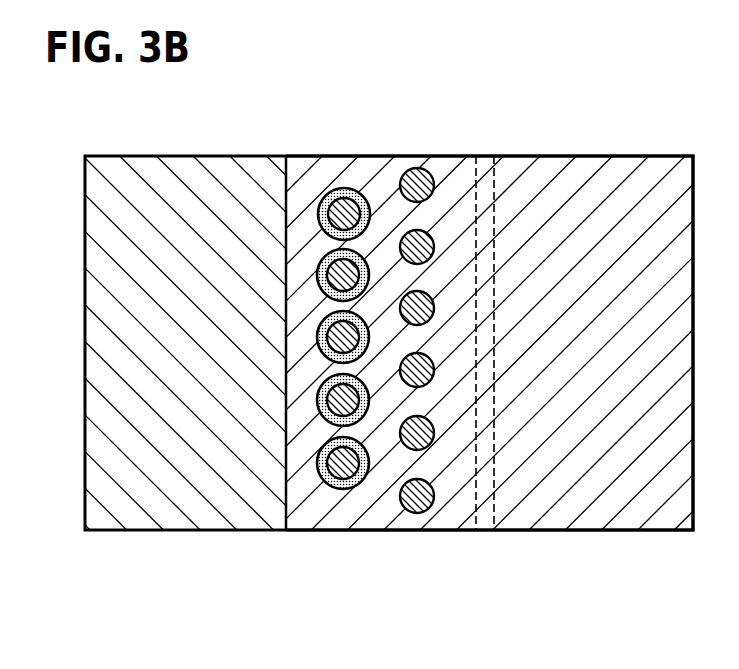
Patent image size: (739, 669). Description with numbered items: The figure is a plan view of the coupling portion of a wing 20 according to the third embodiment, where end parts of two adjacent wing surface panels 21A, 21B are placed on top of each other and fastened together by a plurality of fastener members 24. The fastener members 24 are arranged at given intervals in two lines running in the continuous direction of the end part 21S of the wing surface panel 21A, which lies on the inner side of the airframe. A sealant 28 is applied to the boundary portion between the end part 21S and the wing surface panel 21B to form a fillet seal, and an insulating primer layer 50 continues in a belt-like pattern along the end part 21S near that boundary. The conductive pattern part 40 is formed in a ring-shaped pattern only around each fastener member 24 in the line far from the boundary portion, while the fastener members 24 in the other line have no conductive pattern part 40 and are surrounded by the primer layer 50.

The wing 20 is at (623, 124).
The wing surface panel 21A is at (140, 165).
The wing surface panel 21B is at (666, 162).
The end part 21S is at (482, 497).
The fastener member 24 is at (341, 196).
The sealant 28 is at (494, 208).
The conductive pattern part 40 is at (318, 338).
The insulating primer layer 50 is at (565, 172).